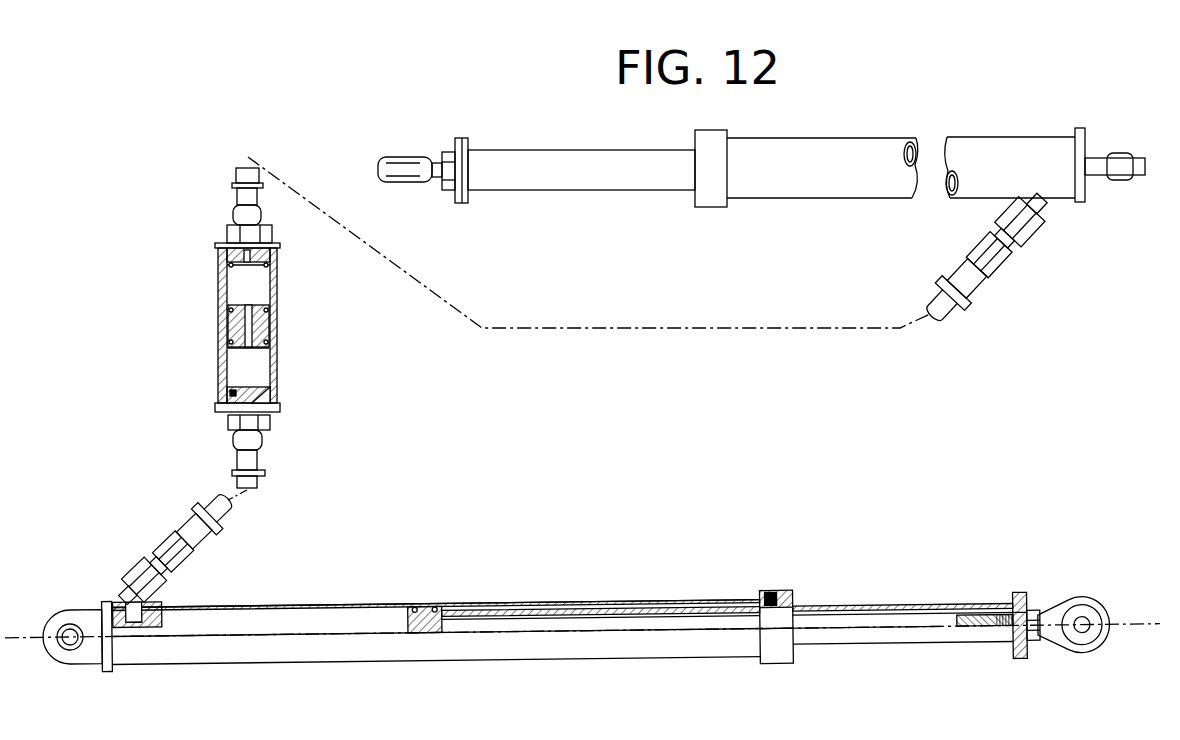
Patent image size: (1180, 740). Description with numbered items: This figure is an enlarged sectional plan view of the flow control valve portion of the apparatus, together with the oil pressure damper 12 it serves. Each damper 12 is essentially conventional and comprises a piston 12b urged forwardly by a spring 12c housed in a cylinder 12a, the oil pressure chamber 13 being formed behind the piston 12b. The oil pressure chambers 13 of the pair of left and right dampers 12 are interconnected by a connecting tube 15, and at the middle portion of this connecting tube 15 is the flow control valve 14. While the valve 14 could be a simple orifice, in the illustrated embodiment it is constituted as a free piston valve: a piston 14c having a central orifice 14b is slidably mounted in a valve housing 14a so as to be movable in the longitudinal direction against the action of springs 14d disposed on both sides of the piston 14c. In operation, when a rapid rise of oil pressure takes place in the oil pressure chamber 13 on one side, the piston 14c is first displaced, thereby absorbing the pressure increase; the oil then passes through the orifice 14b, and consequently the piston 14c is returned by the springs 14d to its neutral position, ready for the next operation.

The oil pressure damper 12 is at (806, 145).
The cylinder 12a is at (665, 604).
The piston 12b is at (422, 606).
The spring 12c is at (447, 612).
The oil pressure chamber 13 is at (1004, 145).
The flow control valve 14 is at (255, 328).
The valve housing 14a is at (276, 277).
The central orifice 14b is at (228, 318).
The valve piston 14c is at (270, 326).
The springs 14d is at (227, 281).
The connecting tube 15 is at (988, 258).